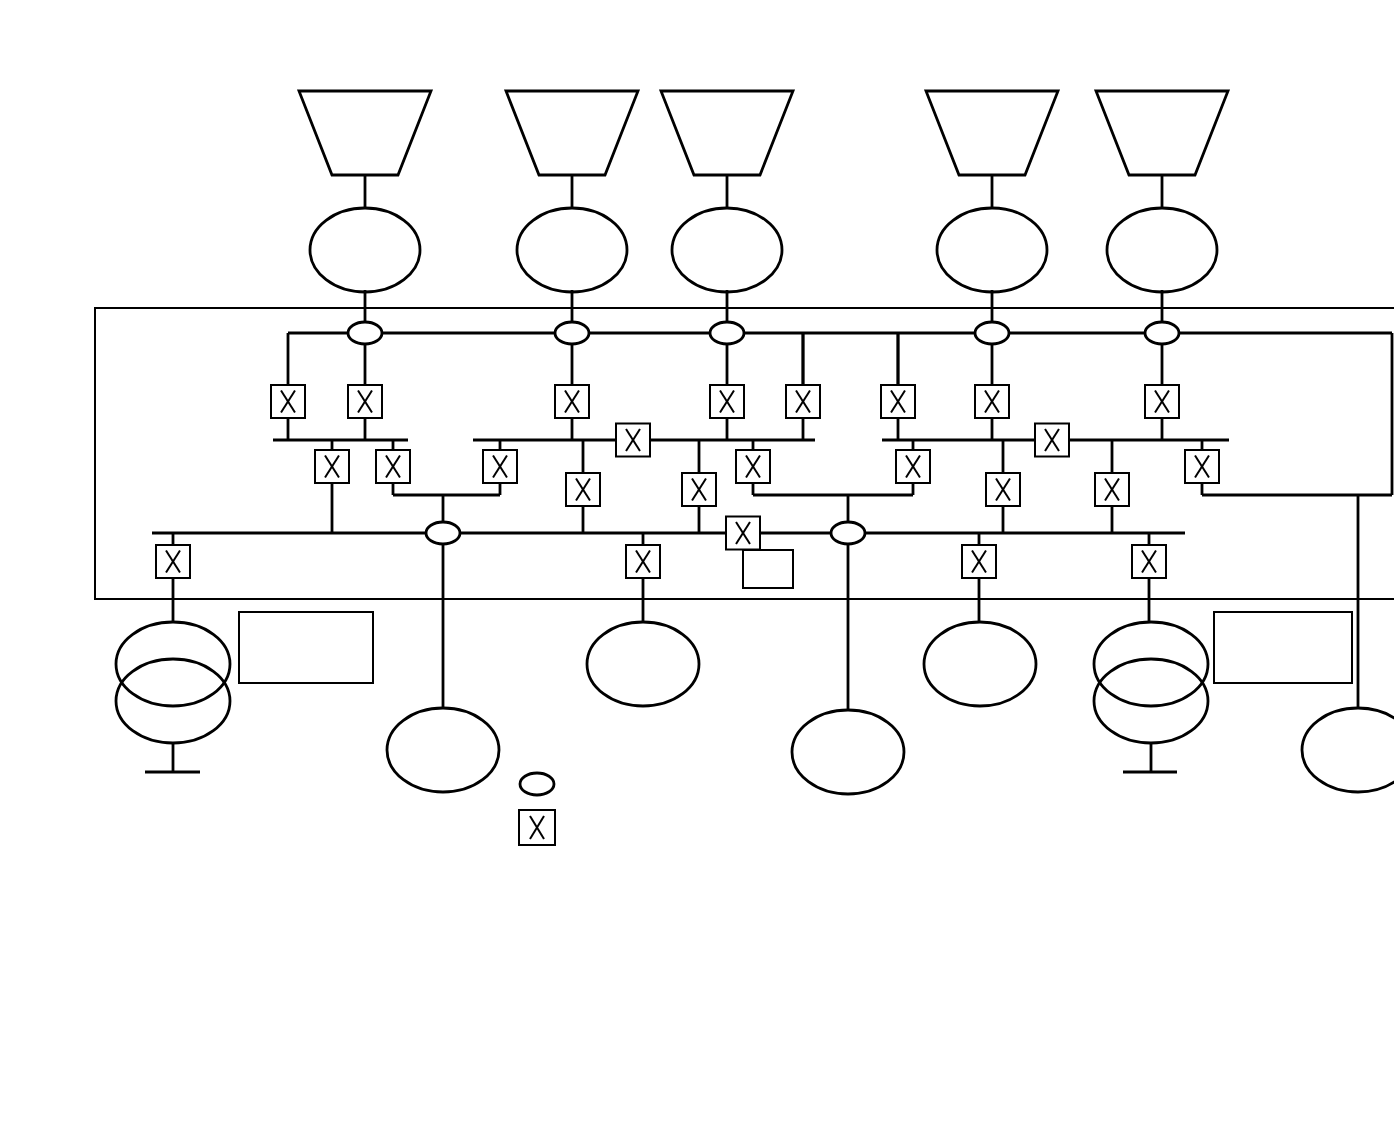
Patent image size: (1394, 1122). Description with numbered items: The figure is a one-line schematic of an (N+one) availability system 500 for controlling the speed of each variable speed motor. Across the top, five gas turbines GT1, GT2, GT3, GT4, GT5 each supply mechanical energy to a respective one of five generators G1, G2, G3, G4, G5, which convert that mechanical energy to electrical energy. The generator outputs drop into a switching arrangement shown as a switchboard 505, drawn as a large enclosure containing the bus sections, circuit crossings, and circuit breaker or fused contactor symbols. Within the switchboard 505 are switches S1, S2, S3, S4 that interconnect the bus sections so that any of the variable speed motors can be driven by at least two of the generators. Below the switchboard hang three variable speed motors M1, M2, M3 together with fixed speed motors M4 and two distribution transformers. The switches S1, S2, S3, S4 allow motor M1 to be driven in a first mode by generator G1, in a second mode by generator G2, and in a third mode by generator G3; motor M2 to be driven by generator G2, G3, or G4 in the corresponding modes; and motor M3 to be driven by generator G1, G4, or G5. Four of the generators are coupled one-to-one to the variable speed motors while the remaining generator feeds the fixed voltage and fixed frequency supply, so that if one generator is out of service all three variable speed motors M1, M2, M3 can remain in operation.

The (N+1) availability system 500 is at (744, 468).
The switchboard 505 is at (744, 500).
The gas turbine GT1 is at (365, 149).
The gas turbine GT2 is at (572, 149).
The gas turbine GT3 is at (727, 149).
The gas turbine GT4 is at (992, 149).
The gas turbine GT5 is at (1162, 149).
The generator G1 is at (365, 250).
The generator G2 is at (572, 250).
The generator G3 is at (727, 250).
The generator G4 is at (992, 250).
The generator G5 is at (1162, 250).
The switch S1 is at (647, 421).
The switch S2 is at (1066, 421).
The switch S3 is at (820, 375).
The switch S4 is at (914, 375).
The variable speed motor M1 is at (443, 750).
The variable speed motor M2 is at (848, 752).
The variable speed motor M3 is at (1348, 750).
The fixed speed motor M4 is at (811, 664).